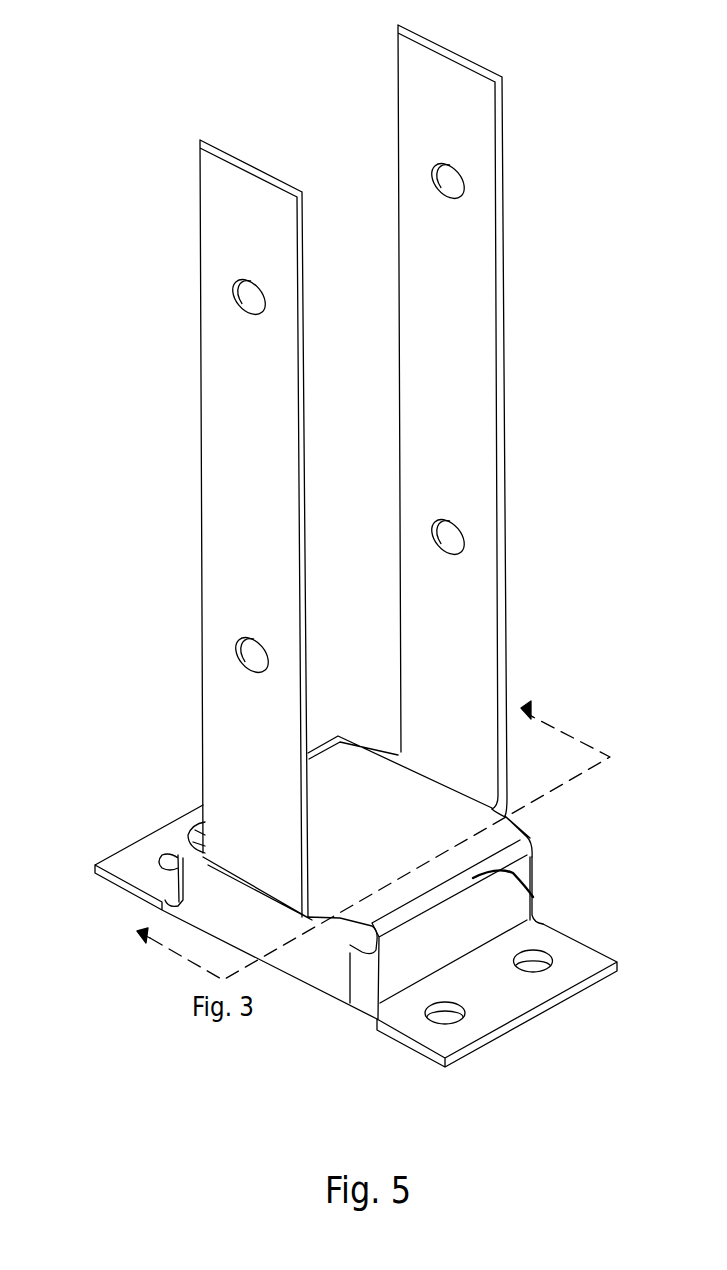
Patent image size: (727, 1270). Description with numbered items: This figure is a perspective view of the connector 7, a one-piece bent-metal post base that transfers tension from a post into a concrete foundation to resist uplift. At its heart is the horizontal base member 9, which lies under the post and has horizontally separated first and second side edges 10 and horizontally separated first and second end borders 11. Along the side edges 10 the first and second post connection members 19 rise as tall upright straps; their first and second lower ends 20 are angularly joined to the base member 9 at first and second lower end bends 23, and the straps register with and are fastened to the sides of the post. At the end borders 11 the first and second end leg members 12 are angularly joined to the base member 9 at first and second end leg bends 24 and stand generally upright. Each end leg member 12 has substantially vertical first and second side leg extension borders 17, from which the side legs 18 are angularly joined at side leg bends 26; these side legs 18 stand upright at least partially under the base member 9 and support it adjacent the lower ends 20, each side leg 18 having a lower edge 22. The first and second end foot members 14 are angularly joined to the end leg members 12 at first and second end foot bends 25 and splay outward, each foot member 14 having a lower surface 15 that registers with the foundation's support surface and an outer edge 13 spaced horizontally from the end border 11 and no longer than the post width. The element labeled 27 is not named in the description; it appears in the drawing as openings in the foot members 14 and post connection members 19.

The connector 7 is at (339, 471).
The base member 9 is at (428, 800).
The first and second side edges 10 is at (372, 742).
The first and second end borders 11 is at (200, 820).
The first and second end leg members 12 is at (400, 985).
The outer edge 13 is at (530, 1017).
The first and second end foot members 14 is at (592, 960).
The lower surface 15 is at (453, 1023).
The first and second side leg extension borders 17 is at (535, 884).
The side legs 18 is at (280, 975).
The first and second post connection members 19 is at (392, 488).
The first and second lower ends 20 is at (463, 783).
The lower edges 22 is at (308, 972).
The first and second lower end bends 23 is at (422, 758).
The first and second end leg bends 24 is at (327, 735).
The first and second end foot bends 25 is at (460, 970).
The side leg bends 26 is at (537, 885).
The fastener hole 27 is at (238, 297).